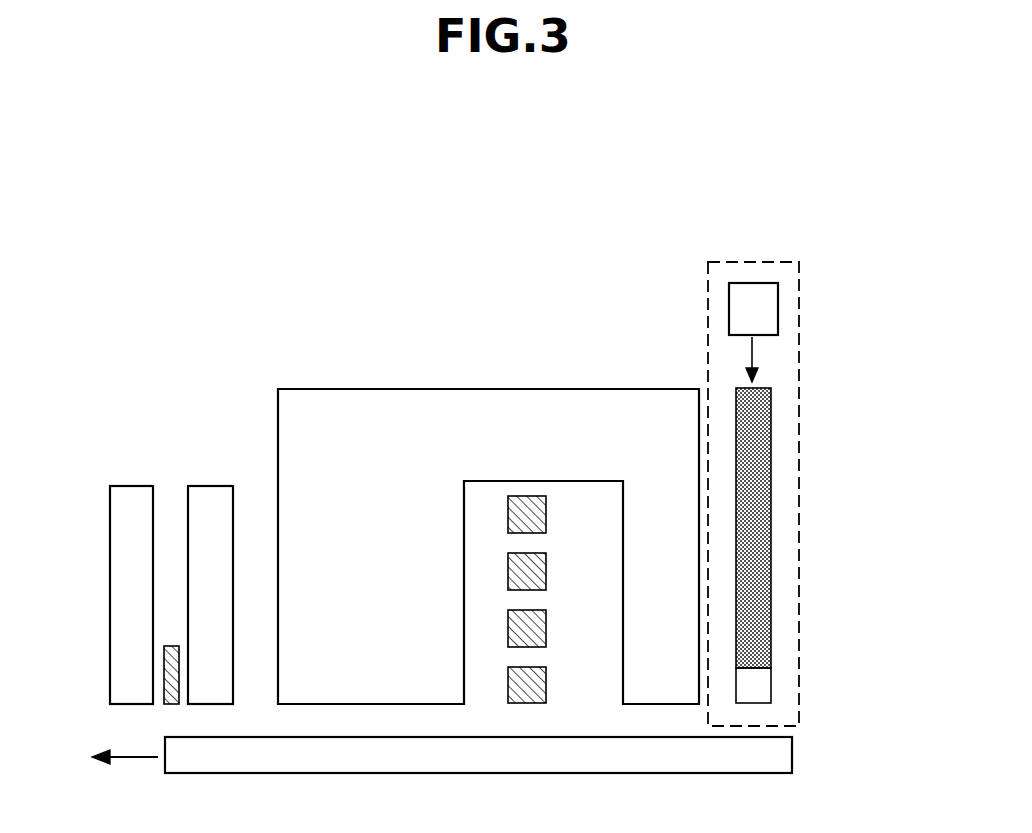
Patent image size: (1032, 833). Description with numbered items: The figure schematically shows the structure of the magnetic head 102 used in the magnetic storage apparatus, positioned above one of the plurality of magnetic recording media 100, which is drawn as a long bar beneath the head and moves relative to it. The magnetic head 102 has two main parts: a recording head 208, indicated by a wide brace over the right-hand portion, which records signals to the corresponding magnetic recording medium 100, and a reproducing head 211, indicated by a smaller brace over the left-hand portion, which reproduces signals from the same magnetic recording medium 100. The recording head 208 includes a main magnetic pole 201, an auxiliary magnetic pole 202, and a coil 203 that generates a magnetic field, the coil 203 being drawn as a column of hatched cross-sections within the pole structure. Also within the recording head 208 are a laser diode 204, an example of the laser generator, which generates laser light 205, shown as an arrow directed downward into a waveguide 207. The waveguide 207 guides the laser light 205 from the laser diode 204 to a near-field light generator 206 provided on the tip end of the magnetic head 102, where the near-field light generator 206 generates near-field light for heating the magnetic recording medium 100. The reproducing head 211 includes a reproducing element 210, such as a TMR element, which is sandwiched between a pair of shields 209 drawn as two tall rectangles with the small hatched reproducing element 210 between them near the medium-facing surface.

The magnetic recording medium 100 is at (776, 757).
The magnetic head 102 is at (851, 149).
The main magnetic pole 201 is at (685, 641).
The auxiliary magnetic pole 202 is at (427, 623).
The coil 203 is at (537, 513).
The laser diode 204 is at (770, 308).
The laser light 205 is at (752, 353).
The near-field light generator 206 is at (763, 686).
The waveguide 207 is at (757, 422).
The recording head 208 is at (811, 245).
The shields 209 is at (207, 493).
The reproducing element 210 is at (170, 703).
The reproducing head 211 is at (247, 412).